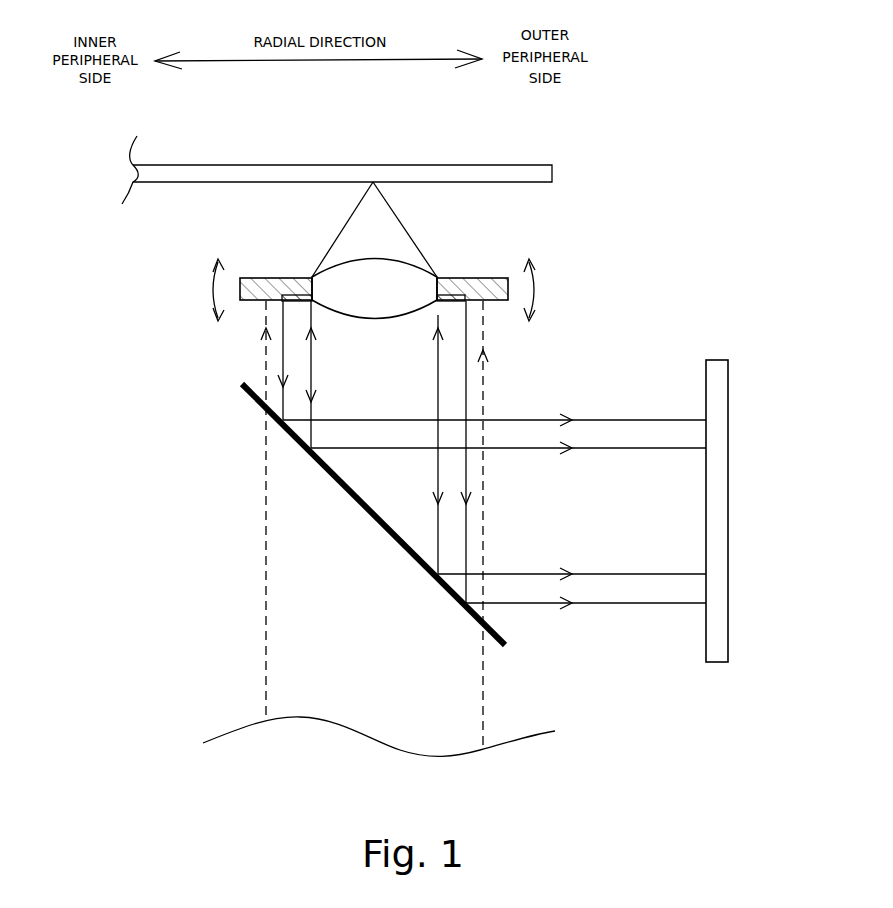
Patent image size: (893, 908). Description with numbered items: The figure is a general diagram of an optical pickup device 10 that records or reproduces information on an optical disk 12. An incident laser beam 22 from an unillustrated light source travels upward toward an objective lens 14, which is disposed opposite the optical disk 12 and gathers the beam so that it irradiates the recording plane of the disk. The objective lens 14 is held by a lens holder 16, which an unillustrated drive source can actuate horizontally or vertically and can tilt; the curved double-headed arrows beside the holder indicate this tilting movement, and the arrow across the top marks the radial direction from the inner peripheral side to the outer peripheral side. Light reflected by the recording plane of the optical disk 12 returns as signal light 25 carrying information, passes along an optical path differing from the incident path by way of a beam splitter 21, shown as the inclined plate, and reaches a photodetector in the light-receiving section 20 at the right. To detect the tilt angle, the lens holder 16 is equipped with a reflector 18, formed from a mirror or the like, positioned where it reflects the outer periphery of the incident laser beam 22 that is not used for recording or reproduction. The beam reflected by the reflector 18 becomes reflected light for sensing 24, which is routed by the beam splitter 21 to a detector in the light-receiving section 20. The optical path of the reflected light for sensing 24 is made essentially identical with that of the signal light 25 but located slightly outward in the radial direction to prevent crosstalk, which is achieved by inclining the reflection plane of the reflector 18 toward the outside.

The optical pickup device 10 is at (662, 186).
The optical disk 12 is at (533, 165).
The objective lens 14 is at (402, 277).
The lens holder 16 is at (497, 280).
The reflector 18 is at (300, 285).
The light-receiving section 20 is at (722, 376).
The beam splitter 21 is at (250, 398).
The incident laser beam 22 is at (266, 545).
The reflected light for sensing 24 is at (466, 397).
The signal light 25 is at (412, 373).